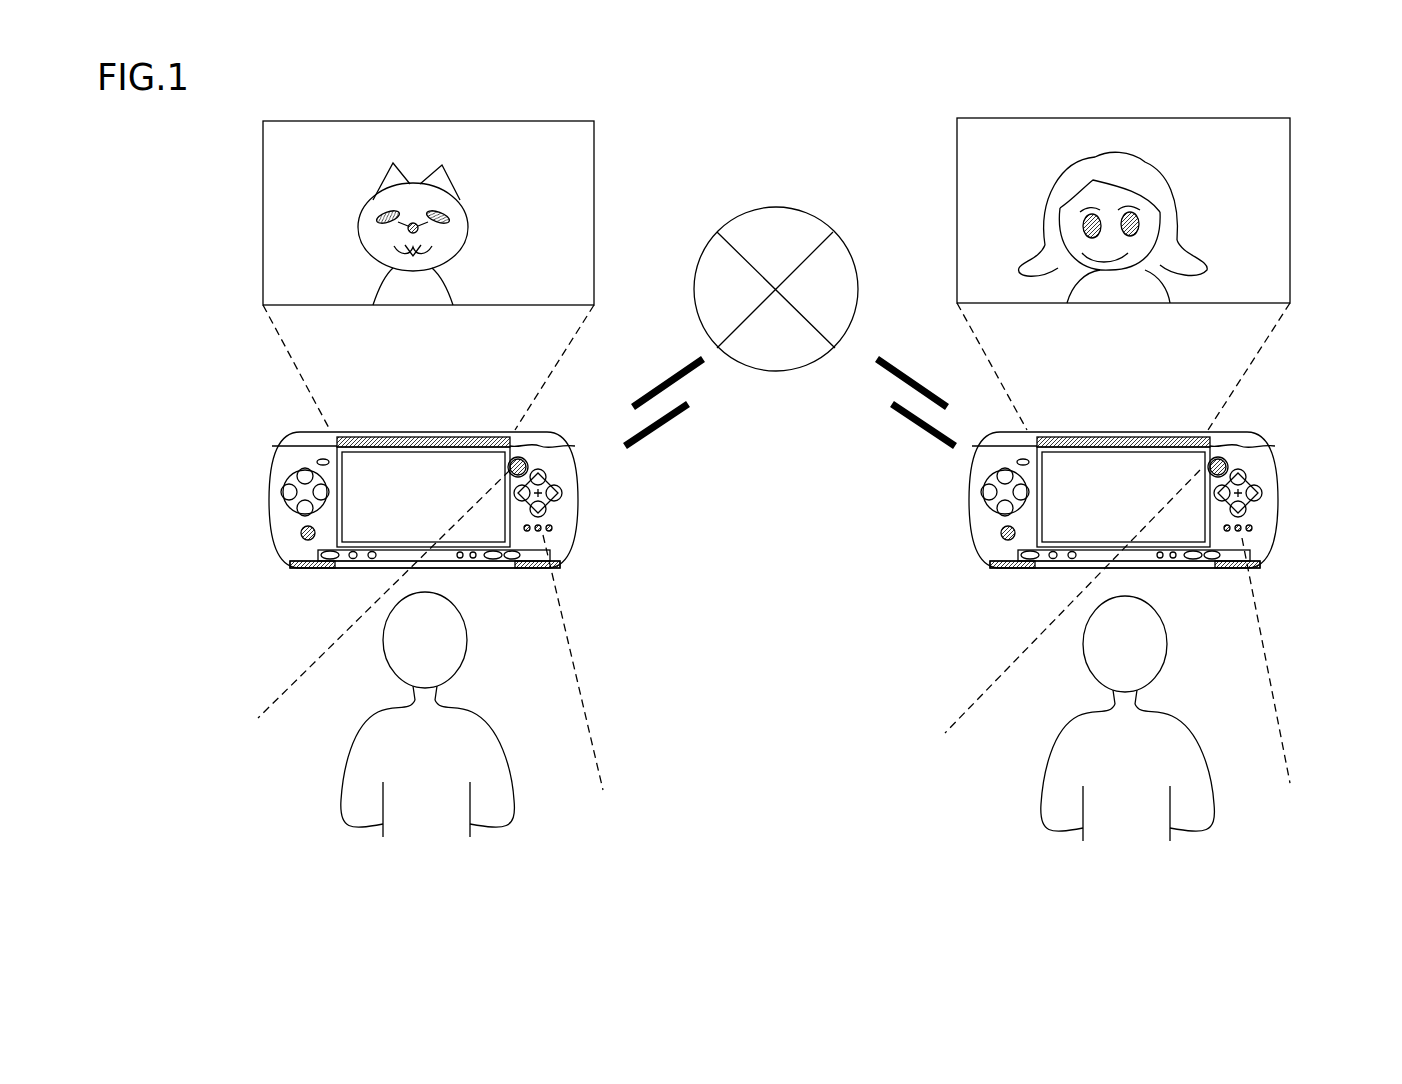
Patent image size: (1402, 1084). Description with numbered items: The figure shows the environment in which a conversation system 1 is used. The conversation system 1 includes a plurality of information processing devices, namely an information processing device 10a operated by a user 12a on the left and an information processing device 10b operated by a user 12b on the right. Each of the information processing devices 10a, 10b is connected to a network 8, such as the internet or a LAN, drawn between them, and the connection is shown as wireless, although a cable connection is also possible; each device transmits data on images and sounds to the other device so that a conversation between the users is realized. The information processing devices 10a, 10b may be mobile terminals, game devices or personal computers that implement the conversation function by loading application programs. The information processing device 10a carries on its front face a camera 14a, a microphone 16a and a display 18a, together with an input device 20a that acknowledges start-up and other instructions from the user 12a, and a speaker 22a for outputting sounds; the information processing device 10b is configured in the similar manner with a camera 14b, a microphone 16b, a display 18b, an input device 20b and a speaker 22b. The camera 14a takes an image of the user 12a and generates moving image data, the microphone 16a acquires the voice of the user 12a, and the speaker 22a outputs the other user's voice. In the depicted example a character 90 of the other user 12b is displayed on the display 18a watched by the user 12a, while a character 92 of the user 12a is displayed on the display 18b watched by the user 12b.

The conversation system 1 is at (762, 883).
The network 8 is at (776, 207).
The information processing device 10a is at (439, 483).
The information processing device 10b is at (1126, 479).
The user 12a is at (357, 818).
The user 12b is at (1052, 822).
The camera 14a is at (521, 466).
The camera 14b is at (1221, 466).
The microphone 16a is at (556, 530).
The microphone 16b is at (1256, 529).
The display 18a is at (408, 455).
The display 18b is at (1110, 452).
The input device 20a is at (513, 480).
The input device 20b is at (1213, 480).
The speaker 22a is at (292, 567).
The speaker 22b is at (1013, 567).
The character 90 is at (468, 212).
The character 92 is at (1178, 215).